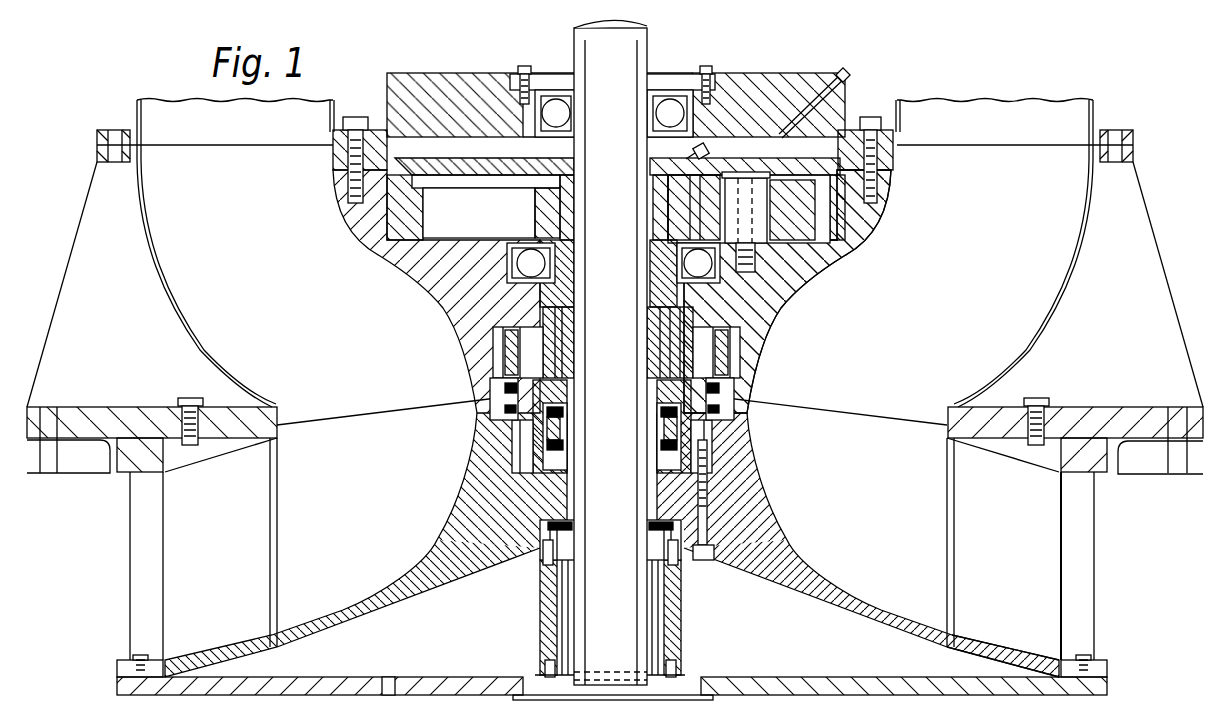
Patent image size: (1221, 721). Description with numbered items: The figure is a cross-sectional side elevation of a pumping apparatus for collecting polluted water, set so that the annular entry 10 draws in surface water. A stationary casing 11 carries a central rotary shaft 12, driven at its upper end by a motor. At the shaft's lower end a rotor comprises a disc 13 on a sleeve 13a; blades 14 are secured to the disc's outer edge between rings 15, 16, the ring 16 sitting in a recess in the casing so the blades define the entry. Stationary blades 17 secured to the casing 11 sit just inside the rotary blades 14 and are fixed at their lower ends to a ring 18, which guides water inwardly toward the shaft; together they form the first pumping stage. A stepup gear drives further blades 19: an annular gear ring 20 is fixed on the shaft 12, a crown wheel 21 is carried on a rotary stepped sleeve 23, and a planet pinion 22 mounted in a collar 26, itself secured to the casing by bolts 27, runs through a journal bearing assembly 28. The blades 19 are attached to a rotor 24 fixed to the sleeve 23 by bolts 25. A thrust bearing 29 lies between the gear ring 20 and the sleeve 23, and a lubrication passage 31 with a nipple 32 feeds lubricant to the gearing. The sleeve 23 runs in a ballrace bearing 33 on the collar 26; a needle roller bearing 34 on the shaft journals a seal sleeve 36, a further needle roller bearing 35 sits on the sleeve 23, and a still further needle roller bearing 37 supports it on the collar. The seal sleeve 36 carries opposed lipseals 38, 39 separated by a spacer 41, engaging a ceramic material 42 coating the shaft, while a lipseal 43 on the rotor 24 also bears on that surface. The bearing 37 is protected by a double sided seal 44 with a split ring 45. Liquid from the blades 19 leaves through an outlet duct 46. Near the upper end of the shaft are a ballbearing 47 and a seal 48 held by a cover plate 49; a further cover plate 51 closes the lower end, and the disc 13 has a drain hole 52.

The annular entry 10 is at (1176, 604).
The stationary casing 11 is at (1195, 440).
The central rotary shaft 12 is at (615, 662).
The disc 13 is at (812, 688).
The sleeve 13a is at (681, 635).
The blades 14 is at (1080, 628).
The ring 15 is at (1100, 670).
The ring 16 is at (1096, 470).
The stationary blades 17 is at (1043, 585).
The ring 18 is at (1012, 665).
The blades 19 is at (887, 428).
The annular gear ring 20 is at (799, 157).
The crown wheel 21 is at (672, 200).
The planet pinion 22 is at (775, 238).
The rotary stepped sleeve 23 is at (660, 272).
The rotor 24 is at (773, 570).
The bolts 25 is at (706, 555).
The collar 26 is at (790, 300).
The bolts 27 is at (883, 128).
The journal bearing assembly 28 is at (795, 282).
The thrust bearing 29 is at (655, 160).
The lubrication passage 31 is at (813, 100).
The nipple 32 is at (850, 76).
The bearing 33 is at (690, 263).
The needle roller bearing 34 is at (655, 324).
The needle roller bearing 35 is at (680, 348).
The seal sleeve 36 is at (660, 390).
The needle roller bearing 37 is at (750, 360).
The lipseal 38 is at (660, 412).
The lipseal 39 is at (712, 432).
The spacer 41 is at (660, 432).
The ceramic material 42 is at (662, 440).
The lipseal 43 is at (655, 521).
The double sided seal 44 is at (735, 385).
The split ring 45 is at (734, 402).
The outlet duct 46 is at (990, 233).
The ballbearing 47 is at (672, 100).
The seal 48 is at (648, 80).
The cover plate 49 is at (550, 82).
The cover plate 51 is at (650, 700).
The drain hole 52 is at (385, 680).